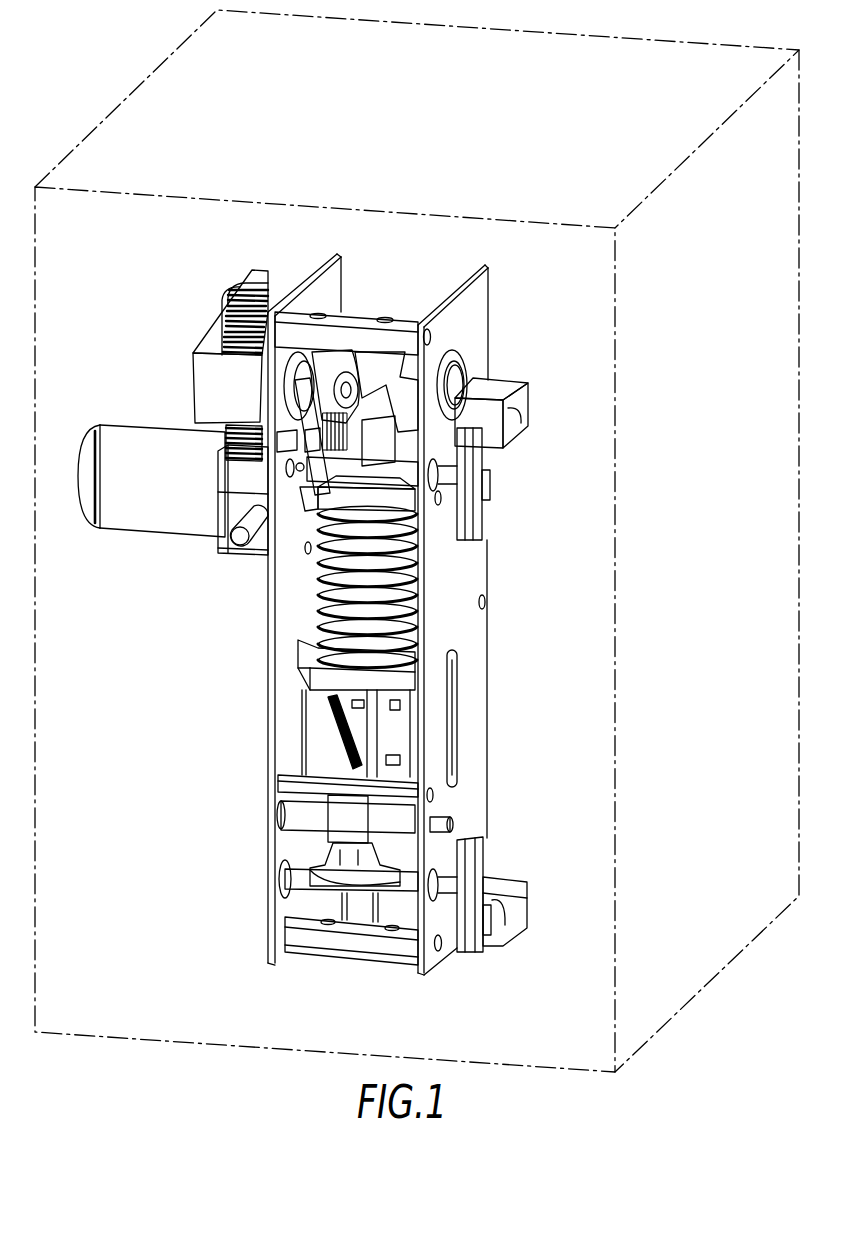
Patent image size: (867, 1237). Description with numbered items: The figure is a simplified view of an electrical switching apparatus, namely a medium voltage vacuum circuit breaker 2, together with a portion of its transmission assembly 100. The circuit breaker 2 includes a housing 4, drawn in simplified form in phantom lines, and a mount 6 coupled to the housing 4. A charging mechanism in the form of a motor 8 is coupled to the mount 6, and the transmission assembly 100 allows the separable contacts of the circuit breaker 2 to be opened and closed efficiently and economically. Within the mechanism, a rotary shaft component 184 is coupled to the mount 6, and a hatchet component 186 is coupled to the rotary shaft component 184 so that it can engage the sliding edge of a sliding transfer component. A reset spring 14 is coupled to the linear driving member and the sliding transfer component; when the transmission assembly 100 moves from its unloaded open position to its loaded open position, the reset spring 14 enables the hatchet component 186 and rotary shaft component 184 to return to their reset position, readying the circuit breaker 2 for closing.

The medium voltage vacuum circuit breaker 2 is at (82, 95).
The housing 4 is at (156, 73).
The mount 6 is at (333, 290).
The motor 8 is at (154, 424).
The reset spring 14 is at (328, 712).
The transmission assembly 100 is at (303, 614).
The rotary shaft component 184 is at (400, 824).
The hatchet component 186 is at (345, 821).